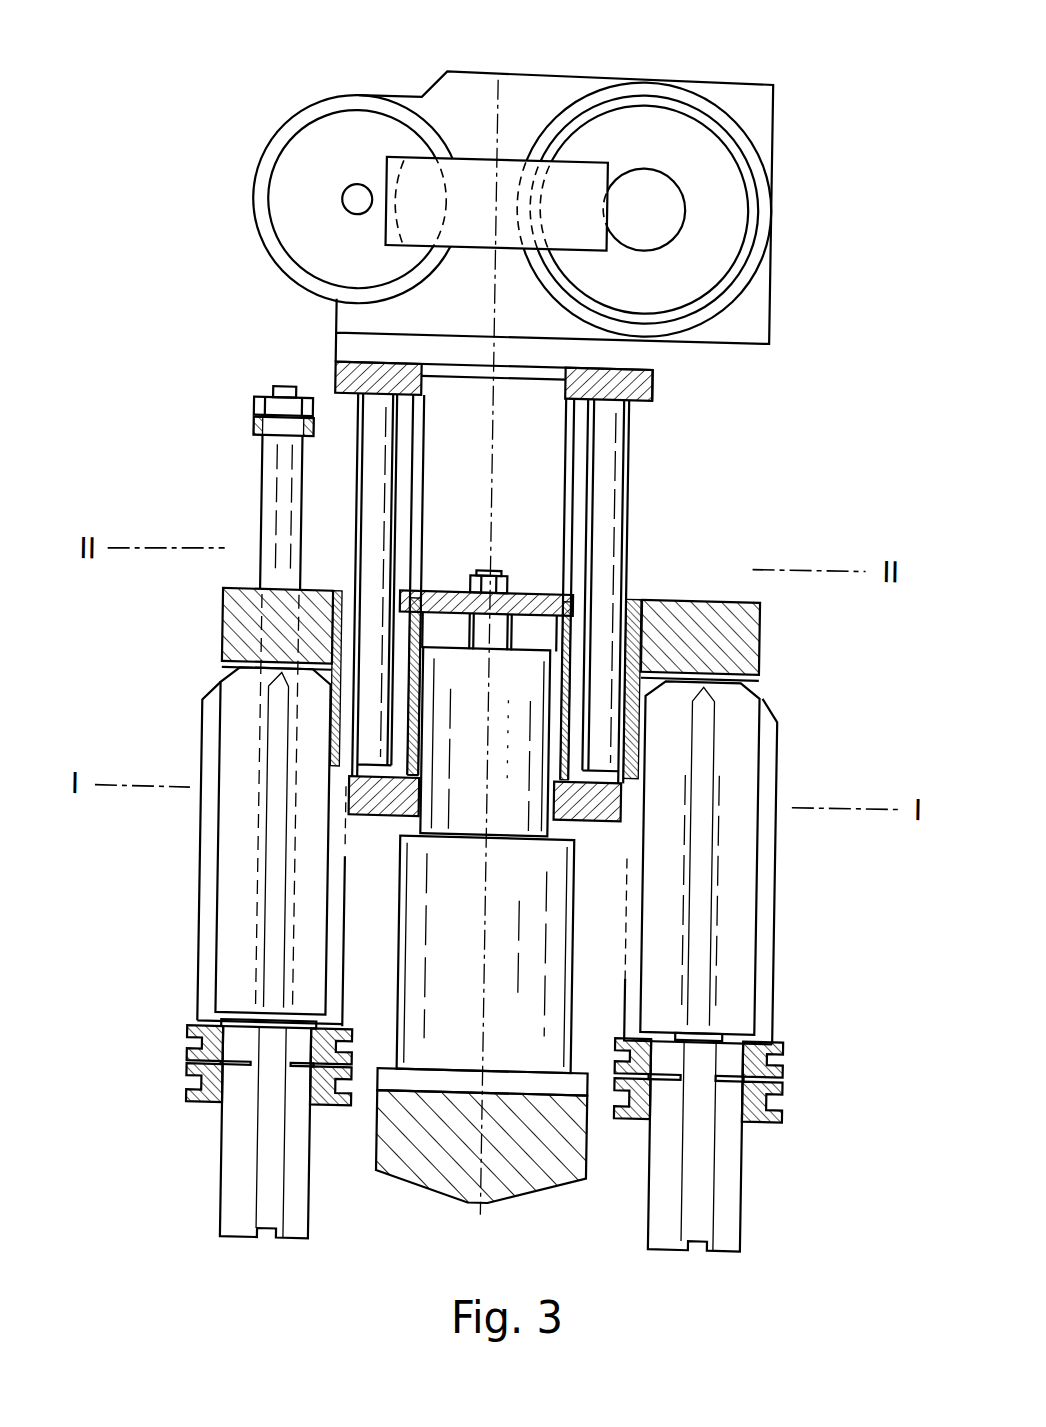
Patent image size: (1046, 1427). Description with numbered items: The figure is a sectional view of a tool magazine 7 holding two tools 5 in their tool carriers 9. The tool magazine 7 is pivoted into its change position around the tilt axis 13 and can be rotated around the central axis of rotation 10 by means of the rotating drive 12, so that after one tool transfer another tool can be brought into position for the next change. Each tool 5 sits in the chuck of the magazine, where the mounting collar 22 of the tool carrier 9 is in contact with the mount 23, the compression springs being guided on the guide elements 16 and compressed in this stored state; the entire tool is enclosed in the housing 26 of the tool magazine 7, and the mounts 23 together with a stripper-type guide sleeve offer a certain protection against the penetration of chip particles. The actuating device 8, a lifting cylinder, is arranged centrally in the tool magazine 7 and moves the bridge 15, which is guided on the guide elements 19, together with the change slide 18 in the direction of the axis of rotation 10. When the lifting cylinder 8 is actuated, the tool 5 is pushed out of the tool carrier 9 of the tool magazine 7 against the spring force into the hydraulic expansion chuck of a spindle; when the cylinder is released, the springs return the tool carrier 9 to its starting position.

The tool 5 is at (238, 727).
The tool magazine 7 is at (150, 393).
The actuating device 8 is at (466, 1046).
The tool carrier 9 is at (738, 639).
The central axis of rotation 10 is at (490, 127).
The rotating drive 12 is at (713, 182).
The tilt axis 13 is at (346, 192).
The bridge 15 is at (532, 599).
The guide element 16 is at (275, 488).
The change slide 18 is at (623, 799).
The guide element 19 is at (603, 474).
The mounting collar 22 is at (800, 1019).
The mount 23 is at (805, 1093).
The housing 26 is at (647, 388).